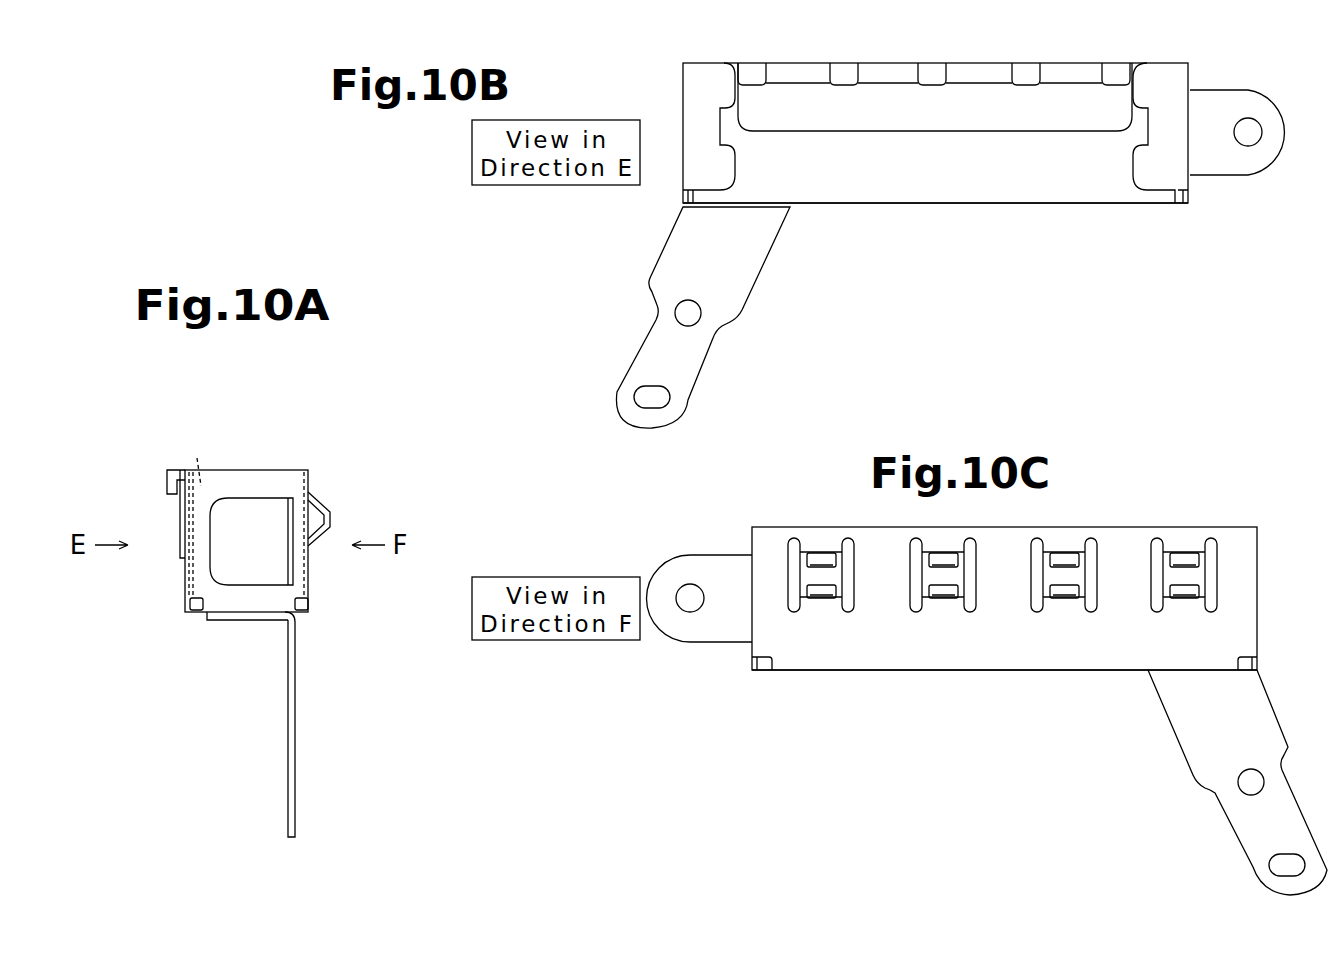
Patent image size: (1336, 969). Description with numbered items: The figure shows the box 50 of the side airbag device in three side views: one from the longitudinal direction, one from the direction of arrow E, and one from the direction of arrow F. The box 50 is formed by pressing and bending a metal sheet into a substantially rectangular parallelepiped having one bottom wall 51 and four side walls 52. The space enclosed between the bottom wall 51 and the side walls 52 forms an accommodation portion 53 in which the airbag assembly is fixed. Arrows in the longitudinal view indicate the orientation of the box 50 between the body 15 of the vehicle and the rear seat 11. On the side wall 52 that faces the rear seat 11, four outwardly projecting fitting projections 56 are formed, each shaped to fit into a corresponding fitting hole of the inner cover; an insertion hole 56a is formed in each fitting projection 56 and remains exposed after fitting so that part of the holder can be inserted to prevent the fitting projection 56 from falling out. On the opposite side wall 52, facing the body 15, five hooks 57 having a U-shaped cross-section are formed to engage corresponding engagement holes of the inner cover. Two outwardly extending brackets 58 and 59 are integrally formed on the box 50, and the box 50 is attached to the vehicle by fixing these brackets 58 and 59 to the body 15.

In FIG. 10B, the box 50 is at (1272, 223).
In FIG. 10A, the box 50 is at (285, 390).
In FIG. 10C, the box 50 is at (668, 542).
In FIG. 10B, the bottom wall 51 is at (990, 204).
In FIG. 10A, the bottom wall 51 is at (247, 613).
In FIG. 10C, the bottom wall 51 is at (940, 672).
In FIG. 10B, the side wall 52 is at (683, 89).
In FIG. 10A, the side wall 52 is at (292, 470).
In FIG. 10C, the side wall 52 is at (752, 537).
In FIG. 10A, the accommodation portion 53 is at (197, 458).
In FIG. 10A, the fitting projection 56 is at (336, 517).
In FIG. 10C, the fitting projection 56 is at (841, 553).
In FIG. 10C, the insertion hole 56a is at (818, 590).
In FIG. 10B, the hook 57 is at (752, 86).
In FIG. 10A, the hook 57 is at (166, 483).
In FIG. 10B, the bracket 58 is at (705, 358).
In FIG. 10A, the bracket 58 is at (296, 770).
In FIG. 10C, the bracket 58 is at (1233, 820).
In FIG. 10B, the bracket 59 is at (1230, 172).
In FIG. 10C, the bracket 59 is at (706, 642).
In FIG. 10A, the body 15 is at (158, 408).
In FIG. 10A, the rear seat 11 is at (315, 408).